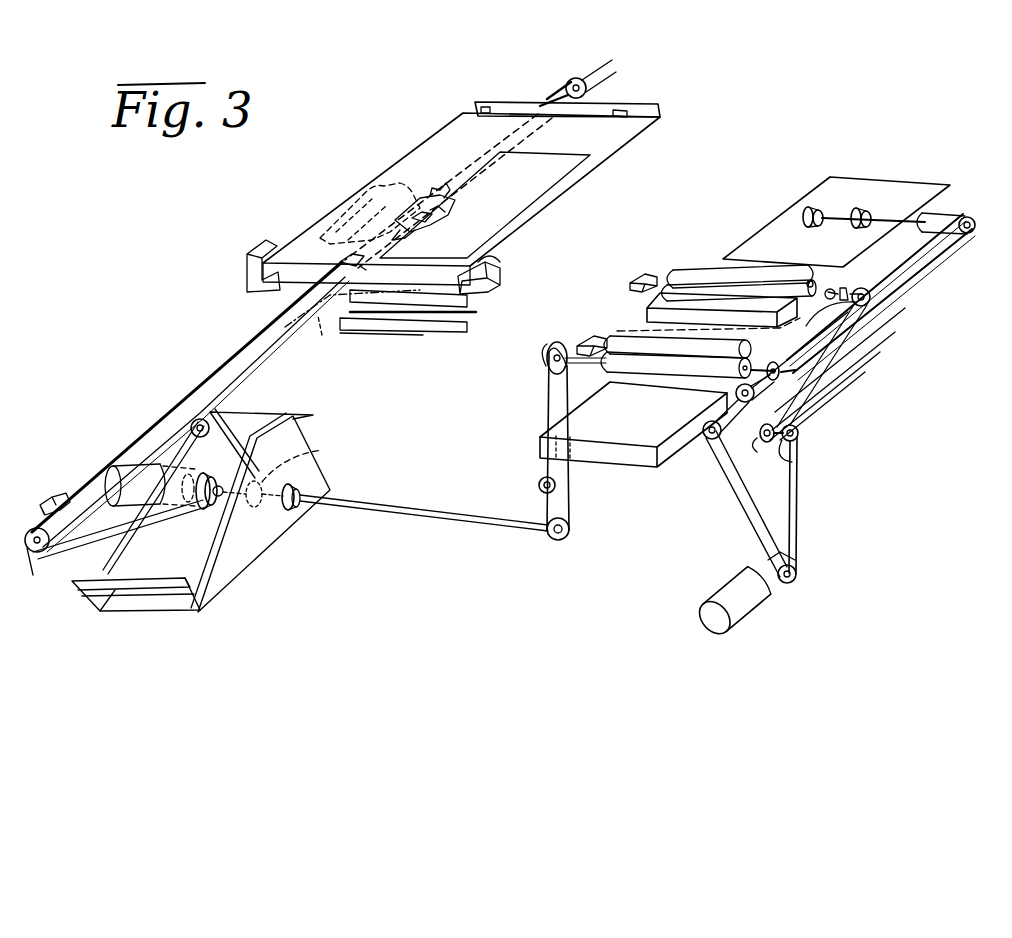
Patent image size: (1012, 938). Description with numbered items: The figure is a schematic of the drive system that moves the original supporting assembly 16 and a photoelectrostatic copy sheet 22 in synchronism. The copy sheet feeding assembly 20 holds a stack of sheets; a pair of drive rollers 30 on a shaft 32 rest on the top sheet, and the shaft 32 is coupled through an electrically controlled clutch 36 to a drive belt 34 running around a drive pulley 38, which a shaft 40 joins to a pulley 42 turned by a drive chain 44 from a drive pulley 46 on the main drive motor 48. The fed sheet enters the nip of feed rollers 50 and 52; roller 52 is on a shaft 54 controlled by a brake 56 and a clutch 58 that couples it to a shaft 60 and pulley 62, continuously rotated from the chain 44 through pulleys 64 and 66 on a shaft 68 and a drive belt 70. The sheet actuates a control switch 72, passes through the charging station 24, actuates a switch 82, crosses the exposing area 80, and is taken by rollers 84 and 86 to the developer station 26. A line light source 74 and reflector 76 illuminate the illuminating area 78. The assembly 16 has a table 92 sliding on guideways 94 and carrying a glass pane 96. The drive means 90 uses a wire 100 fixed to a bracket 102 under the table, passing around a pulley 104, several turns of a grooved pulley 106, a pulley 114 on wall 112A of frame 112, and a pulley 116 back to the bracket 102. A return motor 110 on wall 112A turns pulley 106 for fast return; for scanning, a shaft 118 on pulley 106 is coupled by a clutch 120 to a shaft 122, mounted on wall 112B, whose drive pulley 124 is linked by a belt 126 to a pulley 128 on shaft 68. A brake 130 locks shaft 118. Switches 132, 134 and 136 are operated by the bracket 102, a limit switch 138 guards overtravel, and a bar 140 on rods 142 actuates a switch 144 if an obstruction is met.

The original supporting and moving assembly 16 is at (370, 291).
The copy sheet feeding assembly 20 is at (887, 160).
The photoelectrostatic copy sheet 22 is at (915, 182).
The charging station 24 is at (650, 306).
The developer station 26 is at (538, 443).
The drive rollers 30 is at (806, 210).
The shaft 32 is at (836, 215).
The drive belt 34 is at (940, 265).
The electrically controlled clutch 36 is at (970, 210).
The drive pulley 38 is at (770, 448).
The shaft 40 is at (800, 466).
The pulley 42 is at (800, 434).
The drive chain 44 is at (798, 507).
The drive pulley 46 is at (797, 574).
The main drive motor 48 is at (765, 598).
The feed roller 50 is at (695, 268).
The feed roller 52 is at (772, 290).
The shaft 54 is at (848, 367).
The electrically controllable brake 56 is at (838, 286).
The electrically controlled clutch 58 is at (866, 290).
The shaft 60 is at (868, 336).
The gear or pulley 62 is at (890, 306).
The pulley 64 is at (803, 416).
The pulley 66 is at (780, 372).
The shaft 68 is at (760, 376).
The drive belt 70 is at (836, 378).
The control switch 72 is at (642, 270).
The line light source 74 is at (472, 306).
The reflector 76 is at (462, 333).
The illuminating area 78 is at (321, 335).
The exposing area 80 is at (832, 397).
The control switch 82 is at (585, 333).
The roller 84 is at (641, 350).
The roller 86 is at (684, 364).
The drive means 90 is at (118, 450).
The supporting table or frame 92 is at (632, 130).
The guideways 94 is at (247, 258).
The transparent member 96 is at (548, 170).
The wire 100 is at (258, 340).
The bracket 102 is at (314, 230).
The pulley 104 is at (110, 543).
The grooved pulley 106 is at (207, 512).
The return motor 110 is at (130, 492).
The supporting frame 112 is at (150, 612).
The wall 112A is at (120, 590).
The wall 112B is at (230, 578).
The pulley 114 is at (208, 410).
The pulley 116 is at (576, 77).
The shaft 118 is at (276, 410).
The electrically controlled clutch assembly 120 is at (298, 512).
The shaft 122 is at (392, 504).
The drive pulley 124 is at (570, 533).
The belt 126 is at (572, 497).
The pulley 128 is at (548, 370).
The electrically controlled brake 130 is at (322, 450).
The switch 132 is at (348, 258).
The switch 134 is at (440, 220).
The switch 136 is at (442, 190).
The limit switch 138 is at (60, 495).
The bar or plate 140 is at (624, 91).
The rods 142 is at (488, 104).
The switch 144 is at (612, 75).